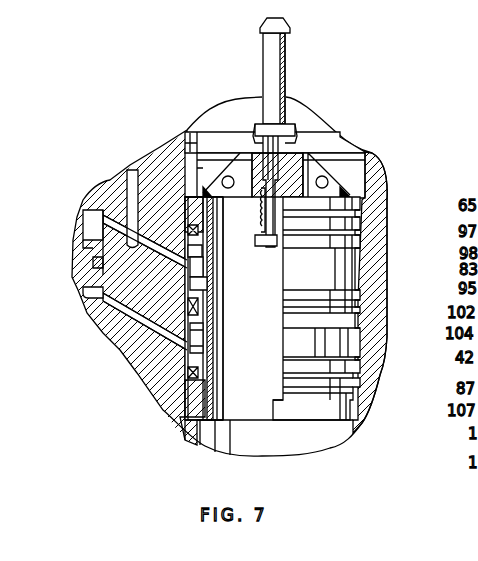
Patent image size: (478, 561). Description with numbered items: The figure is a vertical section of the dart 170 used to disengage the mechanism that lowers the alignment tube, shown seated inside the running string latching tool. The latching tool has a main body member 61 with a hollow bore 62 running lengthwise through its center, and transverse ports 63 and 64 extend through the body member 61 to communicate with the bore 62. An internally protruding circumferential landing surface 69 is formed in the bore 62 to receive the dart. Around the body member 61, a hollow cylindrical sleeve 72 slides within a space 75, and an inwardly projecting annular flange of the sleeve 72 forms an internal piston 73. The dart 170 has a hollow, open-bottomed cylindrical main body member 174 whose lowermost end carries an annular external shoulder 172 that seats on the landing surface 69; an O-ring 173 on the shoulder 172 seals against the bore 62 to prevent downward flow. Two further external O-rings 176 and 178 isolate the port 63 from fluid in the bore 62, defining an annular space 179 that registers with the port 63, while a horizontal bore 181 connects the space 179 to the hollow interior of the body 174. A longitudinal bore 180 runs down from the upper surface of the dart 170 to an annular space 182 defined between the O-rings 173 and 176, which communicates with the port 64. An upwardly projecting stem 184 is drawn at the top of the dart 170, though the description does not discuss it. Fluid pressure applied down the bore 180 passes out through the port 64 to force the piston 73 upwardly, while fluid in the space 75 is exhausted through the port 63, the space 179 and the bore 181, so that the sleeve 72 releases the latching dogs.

The main body member 61 is at (163, 369).
The hollow bore 62 is at (242, 127).
The port 63 is at (117, 180).
The port 64 is at (100, 316).
The landing surface 69 is at (197, 431).
The sleeve 72 is at (78, 285).
The internal piston 73 is at (93, 257).
The space 75 is at (93, 232).
The dart 170 is at (348, 196).
The external shoulder 172 is at (300, 413).
The O-ring 173 is at (193, 373).
The main body member 174 is at (327, 279).
The O-ring 176 is at (193, 307).
The O-ring 178 is at (192, 229).
The annular space 179 is at (200, 284).
The longitudinal bore 180 is at (207, 248).
The horizontal bore 181 is at (210, 267).
The annular space 182 is at (198, 343).
The valve stem 184 is at (286, 51).